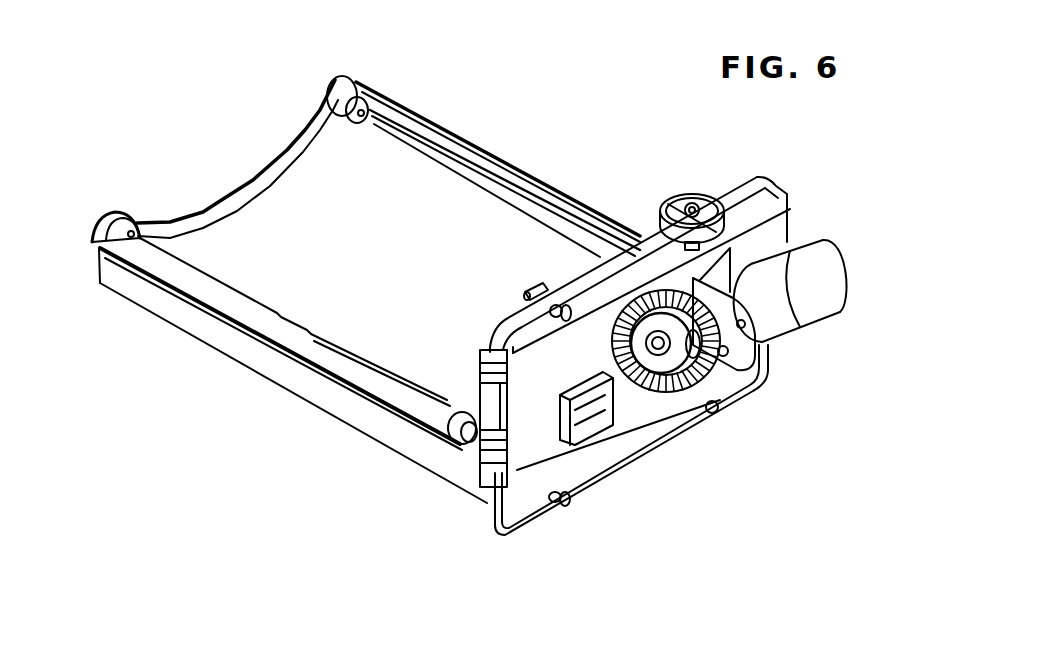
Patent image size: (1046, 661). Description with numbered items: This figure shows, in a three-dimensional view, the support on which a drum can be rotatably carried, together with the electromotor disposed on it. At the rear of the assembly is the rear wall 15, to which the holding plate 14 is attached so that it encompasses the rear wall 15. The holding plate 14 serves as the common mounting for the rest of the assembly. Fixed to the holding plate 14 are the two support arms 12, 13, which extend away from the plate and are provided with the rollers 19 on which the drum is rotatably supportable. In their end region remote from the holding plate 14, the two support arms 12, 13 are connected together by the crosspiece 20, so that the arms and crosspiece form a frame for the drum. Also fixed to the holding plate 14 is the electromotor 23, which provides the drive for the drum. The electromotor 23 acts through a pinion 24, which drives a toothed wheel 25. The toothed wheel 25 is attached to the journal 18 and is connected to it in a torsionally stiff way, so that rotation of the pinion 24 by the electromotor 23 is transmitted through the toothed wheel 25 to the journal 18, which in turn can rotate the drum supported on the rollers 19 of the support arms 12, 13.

The support arm 12 is at (494, 160).
The support arm 13 is at (317, 347).
The holding plate 14 is at (770, 237).
The rear wall 15 is at (740, 203).
The journal 18 is at (656, 382).
The rollers 19 is at (96, 254).
The crosspiece 20 is at (233, 203).
The electromotor 23 is at (830, 278).
The pinion 24 is at (720, 362).
The toothed wheel 25 is at (614, 382).